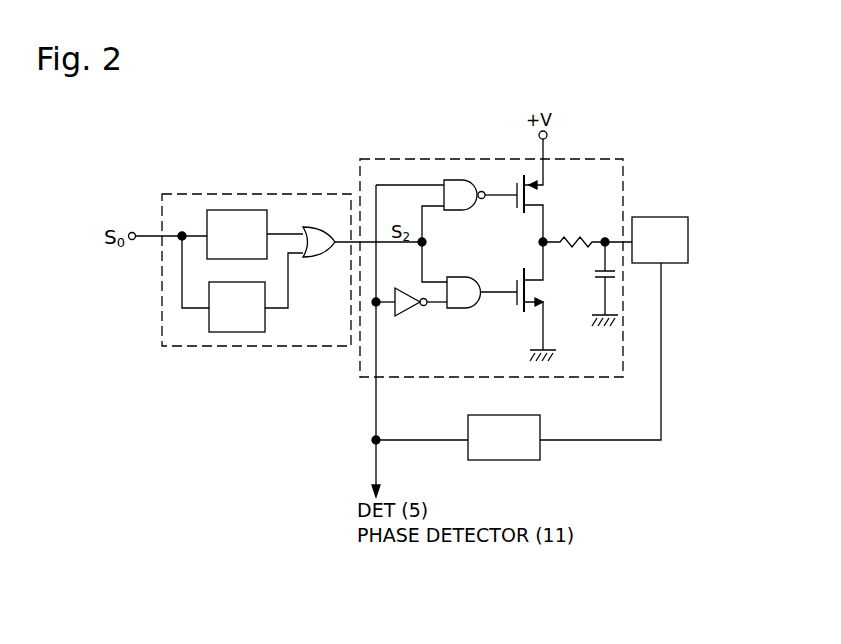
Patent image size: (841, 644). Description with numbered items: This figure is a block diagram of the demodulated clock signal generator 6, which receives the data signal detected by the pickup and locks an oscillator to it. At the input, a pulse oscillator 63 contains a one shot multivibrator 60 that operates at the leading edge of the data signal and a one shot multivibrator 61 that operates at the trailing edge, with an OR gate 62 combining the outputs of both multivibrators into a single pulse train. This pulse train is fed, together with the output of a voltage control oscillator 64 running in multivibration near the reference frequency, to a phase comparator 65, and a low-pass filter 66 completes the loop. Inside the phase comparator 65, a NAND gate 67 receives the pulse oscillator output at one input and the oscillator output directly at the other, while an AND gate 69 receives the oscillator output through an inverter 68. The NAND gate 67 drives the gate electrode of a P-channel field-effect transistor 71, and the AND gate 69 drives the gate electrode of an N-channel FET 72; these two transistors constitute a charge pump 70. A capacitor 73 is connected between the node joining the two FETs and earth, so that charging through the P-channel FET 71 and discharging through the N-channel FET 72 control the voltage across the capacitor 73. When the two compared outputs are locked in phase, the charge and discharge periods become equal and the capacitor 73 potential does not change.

The demodulated clock signal generator 6 is at (336, 386).
The one shot multivibrator 60 is at (262, 214).
The one shot multivibrator 61 is at (262, 324).
The OR gate 62 is at (307, 258).
The pulse oscillator 63 is at (237, 346).
The voltage control oscillator 64 is at (540, 449).
The phase comparator 65 is at (591, 377).
The low-pass filter 66 is at (688, 243).
The NAND gate 67 is at (458, 210).
The inverter 68 is at (405, 316).
The AND gate 69 is at (458, 308).
The charge pump 70 is at (548, 242).
The P-channel field-effect transistor 71 is at (517, 210).
The N-channel FET 72 is at (517, 305).
The capacitor 73 is at (595, 283).